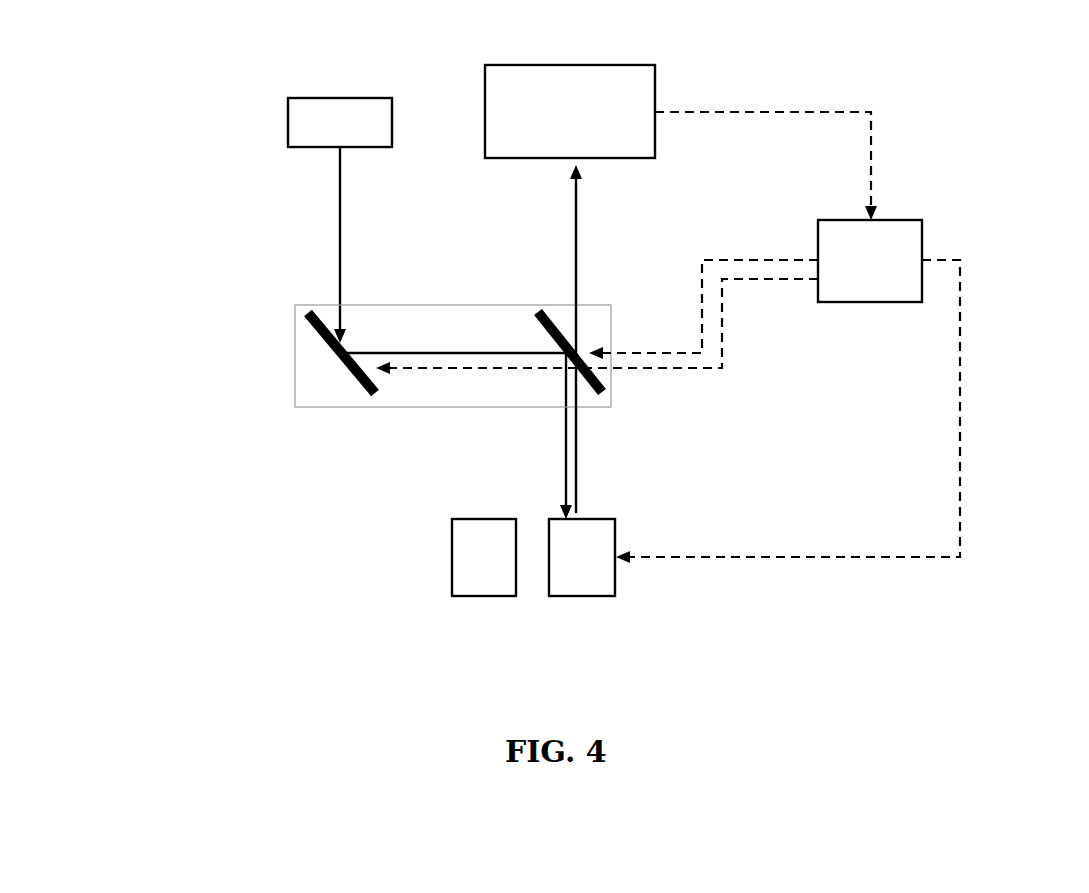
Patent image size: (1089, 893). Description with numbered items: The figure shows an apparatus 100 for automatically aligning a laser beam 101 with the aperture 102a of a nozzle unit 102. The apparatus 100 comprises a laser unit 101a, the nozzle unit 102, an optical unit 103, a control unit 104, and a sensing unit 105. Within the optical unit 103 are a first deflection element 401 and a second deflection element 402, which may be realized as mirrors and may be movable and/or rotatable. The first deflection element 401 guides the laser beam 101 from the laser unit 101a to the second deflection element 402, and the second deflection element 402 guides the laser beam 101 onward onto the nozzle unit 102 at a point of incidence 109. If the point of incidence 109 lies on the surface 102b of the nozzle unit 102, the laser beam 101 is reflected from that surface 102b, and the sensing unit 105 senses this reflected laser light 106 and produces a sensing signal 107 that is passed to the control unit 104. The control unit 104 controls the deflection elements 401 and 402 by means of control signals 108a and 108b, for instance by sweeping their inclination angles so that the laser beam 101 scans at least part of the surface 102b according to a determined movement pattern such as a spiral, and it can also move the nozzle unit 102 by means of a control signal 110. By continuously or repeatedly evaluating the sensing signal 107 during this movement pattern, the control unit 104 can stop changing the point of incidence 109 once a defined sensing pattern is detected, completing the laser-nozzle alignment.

The apparatus 100 is at (221, 537).
The laser beam 101 is at (338, 265).
The laser unit 101a is at (287, 122).
The nozzle unit 102 is at (454, 542).
The aperture 102a is at (535, 588).
The surface 102b is at (597, 519).
The optical unit 103 is at (294, 337).
The control unit 104 is at (922, 258).
The sensing unit 105 is at (655, 92).
The reflected laser light 106 is at (574, 255).
The sensing signal 107 is at (845, 110).
The control signal 108a is at (745, 260).
The control signal 108b is at (723, 338).
The point of incidence 109 is at (562, 511).
The control signal 110 is at (960, 465).
The first deflection element 401 is at (338, 370).
The second deflection element 402 is at (600, 380).